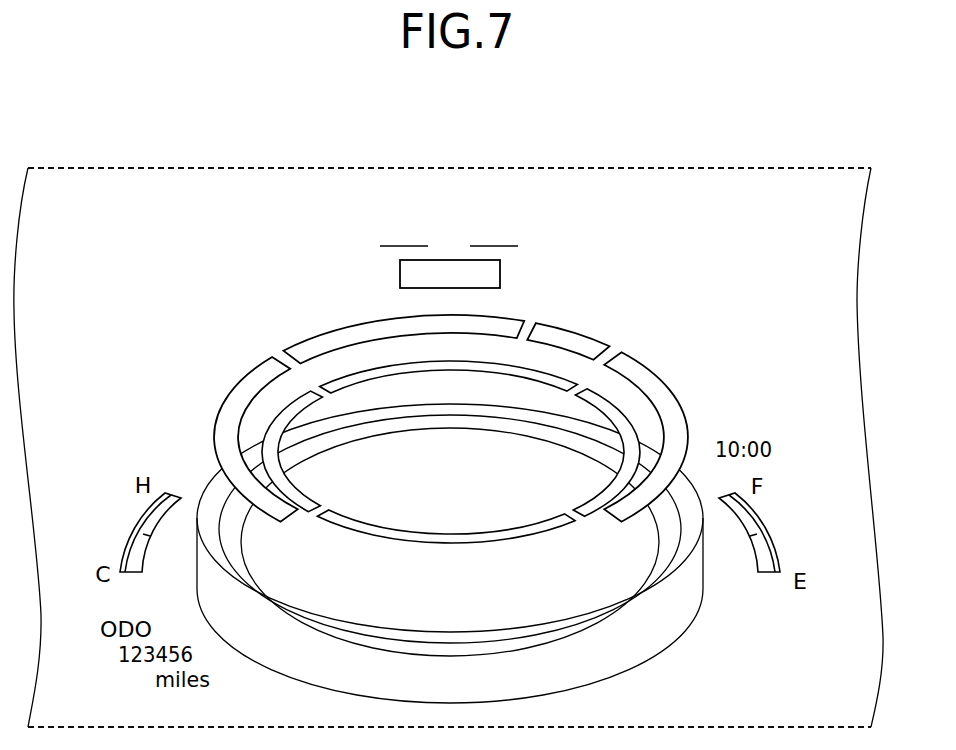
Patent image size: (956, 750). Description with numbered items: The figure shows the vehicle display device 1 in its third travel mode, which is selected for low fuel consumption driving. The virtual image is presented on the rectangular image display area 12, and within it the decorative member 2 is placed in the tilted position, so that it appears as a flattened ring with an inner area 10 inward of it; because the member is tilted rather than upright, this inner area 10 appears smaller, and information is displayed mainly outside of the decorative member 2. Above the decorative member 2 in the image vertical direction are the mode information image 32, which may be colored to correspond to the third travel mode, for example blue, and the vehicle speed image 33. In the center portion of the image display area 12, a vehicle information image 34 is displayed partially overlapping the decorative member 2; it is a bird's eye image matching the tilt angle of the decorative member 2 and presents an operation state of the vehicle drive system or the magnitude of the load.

The vehicle display device 1 is at (169, 156).
The decorative member 2 is at (691, 471).
The inner area 10 is at (266, 538).
The image display area 12 is at (700, 168).
The mode information image 32 is at (501, 276).
The vehicle speed image 33 is at (496, 214).
The vehicle information image 34 is at (590, 340).